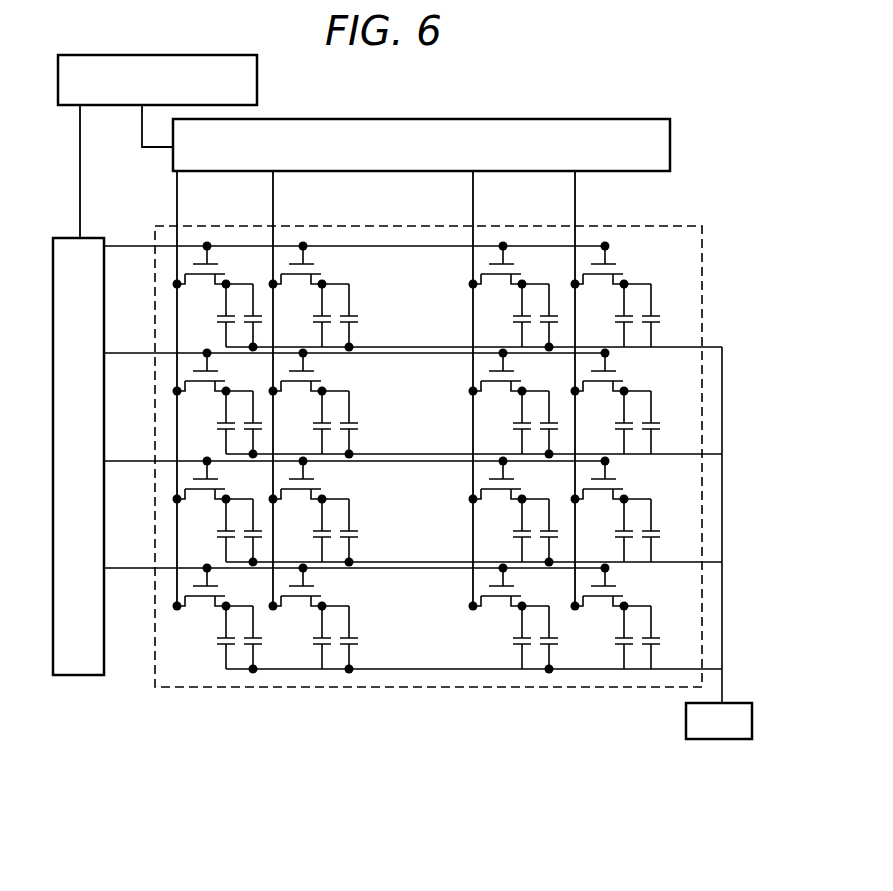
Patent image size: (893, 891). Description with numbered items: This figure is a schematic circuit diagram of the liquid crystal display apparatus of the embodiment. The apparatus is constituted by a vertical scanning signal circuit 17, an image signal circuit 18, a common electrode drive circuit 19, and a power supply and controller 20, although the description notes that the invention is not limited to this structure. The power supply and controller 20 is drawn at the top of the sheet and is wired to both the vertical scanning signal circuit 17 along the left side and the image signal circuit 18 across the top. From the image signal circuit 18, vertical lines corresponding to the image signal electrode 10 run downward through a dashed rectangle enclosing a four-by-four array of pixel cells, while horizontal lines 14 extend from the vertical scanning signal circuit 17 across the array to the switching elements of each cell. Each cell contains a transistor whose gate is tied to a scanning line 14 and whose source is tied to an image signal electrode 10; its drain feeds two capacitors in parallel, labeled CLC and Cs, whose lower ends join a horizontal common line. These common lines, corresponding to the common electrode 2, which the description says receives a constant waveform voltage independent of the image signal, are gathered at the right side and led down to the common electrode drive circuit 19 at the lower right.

The common electrode 2 is at (693, 346).
The image signal electrode 10 is at (578, 212).
The gate line 14 is at (121, 570).
The vertical scanning signal circuit 17 is at (60, 497).
The image signal circuit 18 is at (497, 122).
The common electrode drive circuit 19 is at (736, 704).
The power supply and controller 20 is at (150, 62).
The liquid crystal capacitor CLC is at (331, 416).
The storage capacitor Cs is at (360, 432).